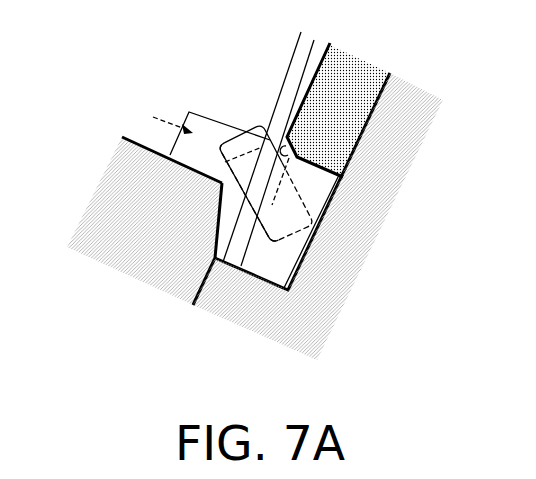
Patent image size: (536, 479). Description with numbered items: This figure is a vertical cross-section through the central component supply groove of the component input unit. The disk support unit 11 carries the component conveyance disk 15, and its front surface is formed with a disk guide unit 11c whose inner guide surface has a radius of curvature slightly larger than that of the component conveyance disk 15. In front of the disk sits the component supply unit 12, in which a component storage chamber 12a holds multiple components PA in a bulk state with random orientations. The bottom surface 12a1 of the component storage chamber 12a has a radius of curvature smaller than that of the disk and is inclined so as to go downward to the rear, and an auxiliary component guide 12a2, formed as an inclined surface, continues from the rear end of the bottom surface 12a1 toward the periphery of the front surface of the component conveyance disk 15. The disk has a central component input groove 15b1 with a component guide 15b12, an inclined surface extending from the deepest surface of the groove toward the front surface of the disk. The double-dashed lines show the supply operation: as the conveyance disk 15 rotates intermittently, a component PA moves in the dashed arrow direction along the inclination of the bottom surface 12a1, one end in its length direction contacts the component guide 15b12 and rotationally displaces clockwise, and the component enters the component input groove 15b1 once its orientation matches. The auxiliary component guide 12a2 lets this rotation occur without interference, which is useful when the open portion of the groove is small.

The disk support unit 11 is at (414, 93).
The disk guide unit 11c is at (237, 312).
The component supply unit 12 is at (113, 257).
The component storage chamber 12a is at (215, 51).
The bottom surface 12a1 is at (132, 136).
The auxiliary component guide 12a2 is at (213, 227).
The component conveyance disk 15 is at (352, 67).
The central component input groove 15b1 is at (337, 180).
The component guide 15b12 is at (287, 146).
The component PA is at (187, 113).